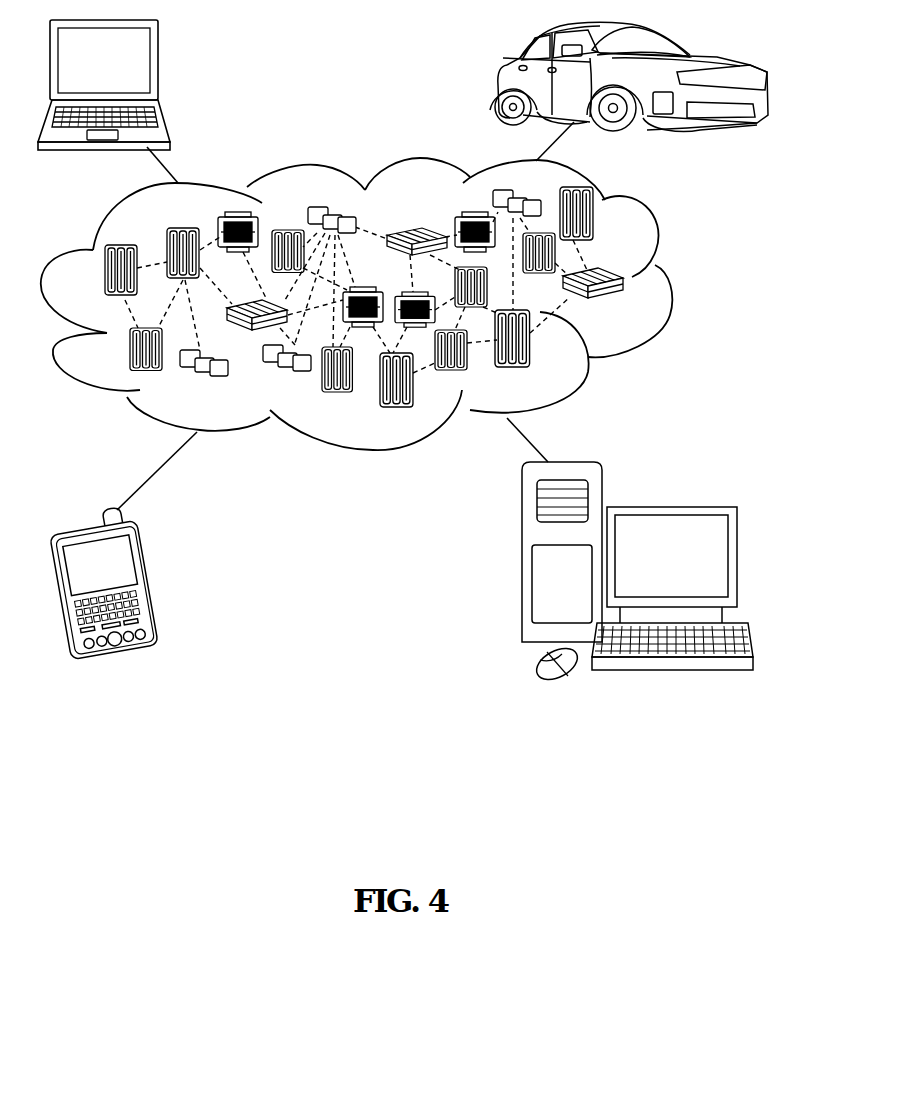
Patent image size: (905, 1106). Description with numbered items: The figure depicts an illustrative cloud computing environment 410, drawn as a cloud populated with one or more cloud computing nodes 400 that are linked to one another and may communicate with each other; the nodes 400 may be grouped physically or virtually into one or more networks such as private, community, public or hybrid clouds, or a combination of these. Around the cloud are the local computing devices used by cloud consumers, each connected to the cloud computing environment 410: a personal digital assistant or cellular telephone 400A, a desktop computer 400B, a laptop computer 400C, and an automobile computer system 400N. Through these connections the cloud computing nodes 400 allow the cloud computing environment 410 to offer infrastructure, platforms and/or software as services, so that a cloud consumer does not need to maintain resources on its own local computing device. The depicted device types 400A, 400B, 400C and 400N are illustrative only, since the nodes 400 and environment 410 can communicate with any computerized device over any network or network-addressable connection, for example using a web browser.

The cloud computing nodes 400 is at (385, 304).
The cloud computing environment 410 is at (671, 285).
The personal digital assistant (PDA) or cellular telephone 400A is at (150, 577).
The desktop computer 400B is at (670, 505).
The laptop computer 400C is at (158, 68).
The automobile computer system 400N is at (500, 82).